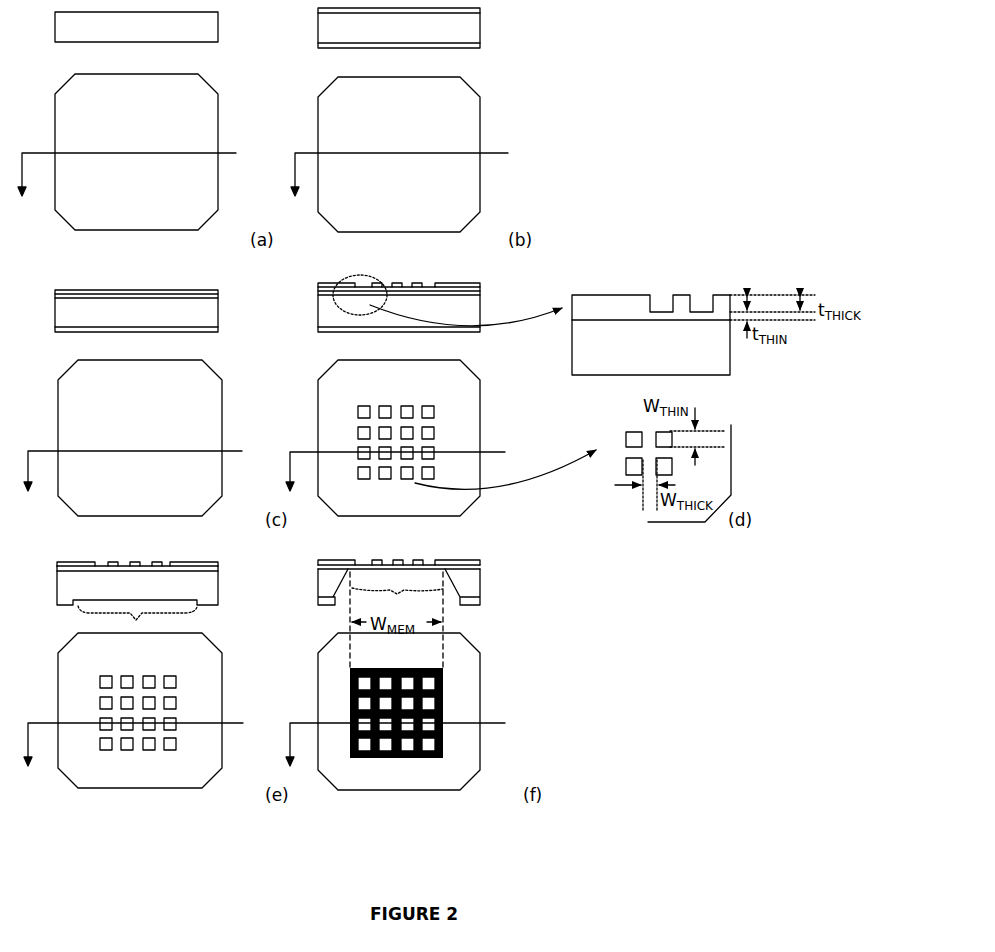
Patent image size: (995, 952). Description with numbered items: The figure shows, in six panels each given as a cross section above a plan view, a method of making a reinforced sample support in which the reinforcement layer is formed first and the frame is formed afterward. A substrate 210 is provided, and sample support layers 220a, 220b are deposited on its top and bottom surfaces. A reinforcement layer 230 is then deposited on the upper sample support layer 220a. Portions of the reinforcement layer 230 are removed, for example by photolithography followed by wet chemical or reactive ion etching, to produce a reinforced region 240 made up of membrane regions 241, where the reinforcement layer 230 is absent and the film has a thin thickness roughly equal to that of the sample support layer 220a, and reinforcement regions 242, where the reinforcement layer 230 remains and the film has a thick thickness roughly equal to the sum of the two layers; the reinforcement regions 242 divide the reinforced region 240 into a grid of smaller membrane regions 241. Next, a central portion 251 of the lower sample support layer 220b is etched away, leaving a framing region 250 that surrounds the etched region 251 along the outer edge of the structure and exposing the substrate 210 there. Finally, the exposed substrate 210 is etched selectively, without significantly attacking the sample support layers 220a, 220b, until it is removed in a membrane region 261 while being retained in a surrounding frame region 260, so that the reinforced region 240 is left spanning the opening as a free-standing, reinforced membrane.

The substrate 210 is at (212, 33).
The sample support layer 220a is at (482, 10).
The sample support layer 220b is at (482, 46).
The reinforcement layer 230 is at (222, 292).
The reinforced region 240 is at (400, 283).
The membrane regions 241 is at (660, 300).
The reinforcement regions 242 is at (683, 297).
The framing region 250 is at (208, 599).
The etched region 251 is at (137, 620).
The frame region 260 is at (480, 571).
The membrane region 261 is at (403, 600).